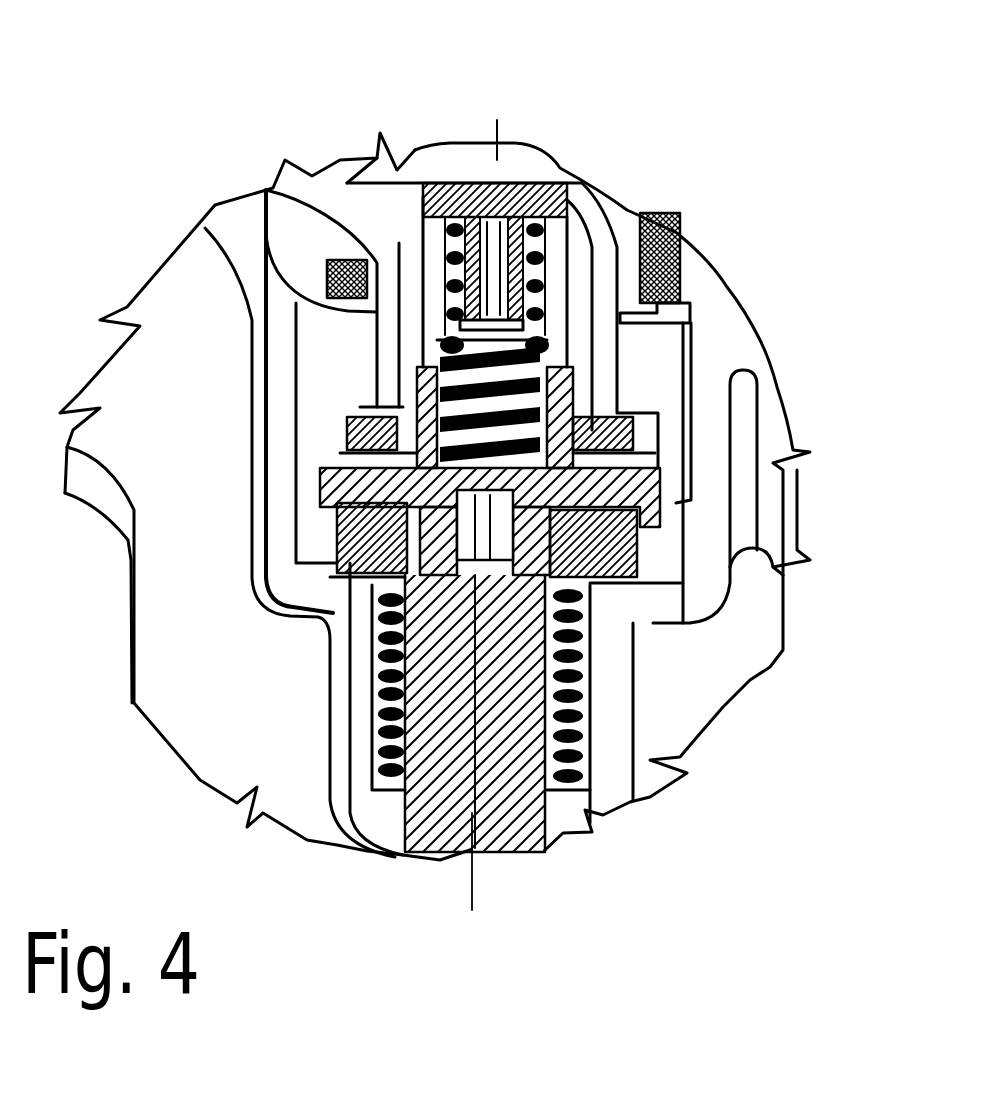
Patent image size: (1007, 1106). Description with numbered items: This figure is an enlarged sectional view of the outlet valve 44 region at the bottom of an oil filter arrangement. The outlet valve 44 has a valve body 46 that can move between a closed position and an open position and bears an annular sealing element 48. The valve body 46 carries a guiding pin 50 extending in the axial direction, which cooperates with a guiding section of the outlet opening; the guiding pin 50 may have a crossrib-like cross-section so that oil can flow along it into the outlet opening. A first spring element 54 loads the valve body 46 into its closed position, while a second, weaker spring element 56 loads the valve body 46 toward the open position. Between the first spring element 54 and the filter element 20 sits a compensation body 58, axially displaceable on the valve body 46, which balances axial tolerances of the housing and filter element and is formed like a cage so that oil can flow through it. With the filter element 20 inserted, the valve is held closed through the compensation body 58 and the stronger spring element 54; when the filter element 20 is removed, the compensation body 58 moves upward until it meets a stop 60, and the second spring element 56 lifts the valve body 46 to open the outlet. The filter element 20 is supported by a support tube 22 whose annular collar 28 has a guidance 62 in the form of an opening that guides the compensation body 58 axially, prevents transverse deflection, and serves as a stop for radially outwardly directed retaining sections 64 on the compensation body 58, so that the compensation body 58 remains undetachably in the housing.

The filter element 20 is at (443, 165).
The support tube 22 is at (683, 215).
The annular collar 28 is at (327, 262).
The outlet valve 44 is at (322, 371).
The valve body 46 is at (640, 470).
The annular sealing element 48 is at (633, 588).
The guiding pin 50 is at (510, 810).
The first spring element 54 is at (432, 244).
The second spring element 56 is at (385, 657).
The compensation body 58 is at (515, 192).
The stop 60 is at (600, 470).
The guidance 62 is at (377, 257).
The retaining sections 64 is at (347, 425).